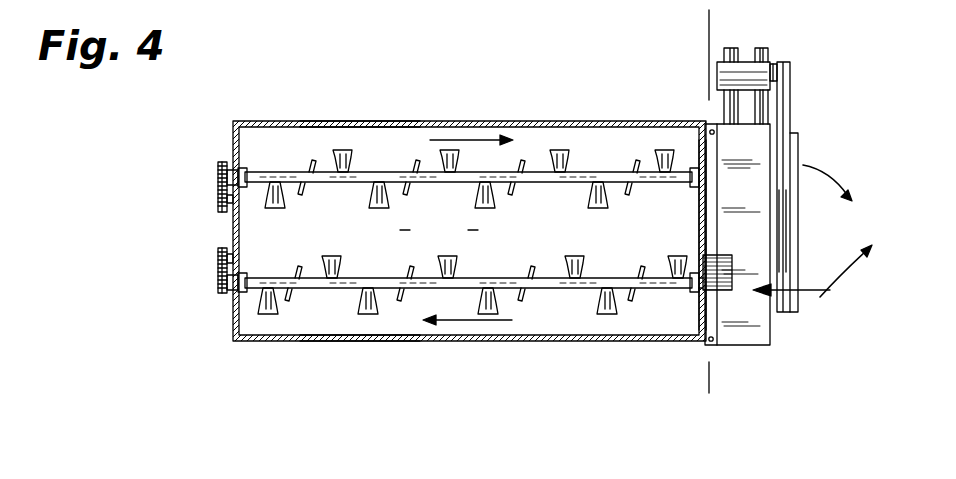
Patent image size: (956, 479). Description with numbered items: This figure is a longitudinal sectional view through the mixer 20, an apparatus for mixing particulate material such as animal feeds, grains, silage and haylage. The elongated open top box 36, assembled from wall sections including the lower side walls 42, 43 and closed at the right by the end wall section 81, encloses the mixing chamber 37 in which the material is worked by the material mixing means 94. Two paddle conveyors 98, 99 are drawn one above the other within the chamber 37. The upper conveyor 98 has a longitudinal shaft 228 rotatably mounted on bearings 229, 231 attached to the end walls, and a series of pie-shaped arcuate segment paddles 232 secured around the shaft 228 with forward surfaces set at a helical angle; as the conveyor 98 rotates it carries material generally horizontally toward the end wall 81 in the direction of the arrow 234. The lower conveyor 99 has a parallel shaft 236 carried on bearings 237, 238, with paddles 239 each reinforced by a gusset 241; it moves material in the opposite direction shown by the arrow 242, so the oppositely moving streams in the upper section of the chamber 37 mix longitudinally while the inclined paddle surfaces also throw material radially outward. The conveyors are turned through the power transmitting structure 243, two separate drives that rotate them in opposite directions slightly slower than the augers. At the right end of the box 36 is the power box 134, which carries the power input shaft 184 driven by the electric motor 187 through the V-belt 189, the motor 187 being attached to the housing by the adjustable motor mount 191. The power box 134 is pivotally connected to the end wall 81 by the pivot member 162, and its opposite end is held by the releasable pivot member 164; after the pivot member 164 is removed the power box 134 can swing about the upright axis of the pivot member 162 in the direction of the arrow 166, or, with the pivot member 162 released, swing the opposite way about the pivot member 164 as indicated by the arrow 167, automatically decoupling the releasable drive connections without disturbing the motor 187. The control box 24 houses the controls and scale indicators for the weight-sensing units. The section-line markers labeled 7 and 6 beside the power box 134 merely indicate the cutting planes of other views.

The mixer 20 is at (318, 98).
The box 36 is at (230, 338).
The chamber 37 is at (439, 224).
The lower side wall 42 is at (417, 336).
The lower side wall 43 is at (432, 122).
The end wall section 81 is at (701, 147).
The material mixing means 94 is at (536, 150).
The paddle conveyor 98 is at (343, 150).
The paddle conveyor 99 is at (347, 312).
The shaft 228 is at (538, 190).
The bearing 229 is at (246, 171).
The bearing 231 is at (693, 188).
The paddles 232 is at (374, 200).
The arrow 234 is at (474, 141).
The shaft 236 is at (547, 283).
The bearing 237 is at (246, 276).
The bearing 238 is at (692, 296).
The paddles 239 is at (500, 310).
The gusset 241 is at (462, 272).
The arrow 242 is at (468, 322).
The power transmitting structure 243 is at (205, 264).
The pivot member 162 is at (716, 134).
The pivot member 164 is at (709, 343).
The control box 24 is at (723, 286).
The power input shaft 184 is at (778, 238).
The V-belt 189 is at (790, 96).
The electric motor 187 is at (741, 72).
The motor mount 191 is at (771, 47).
The arrow 167 is at (828, 175).
The arrow 166 is at (842, 281).
The power box 134 is at (800, 296).
The section line 7 is at (706, 383).
The section line 6 is at (712, 383).